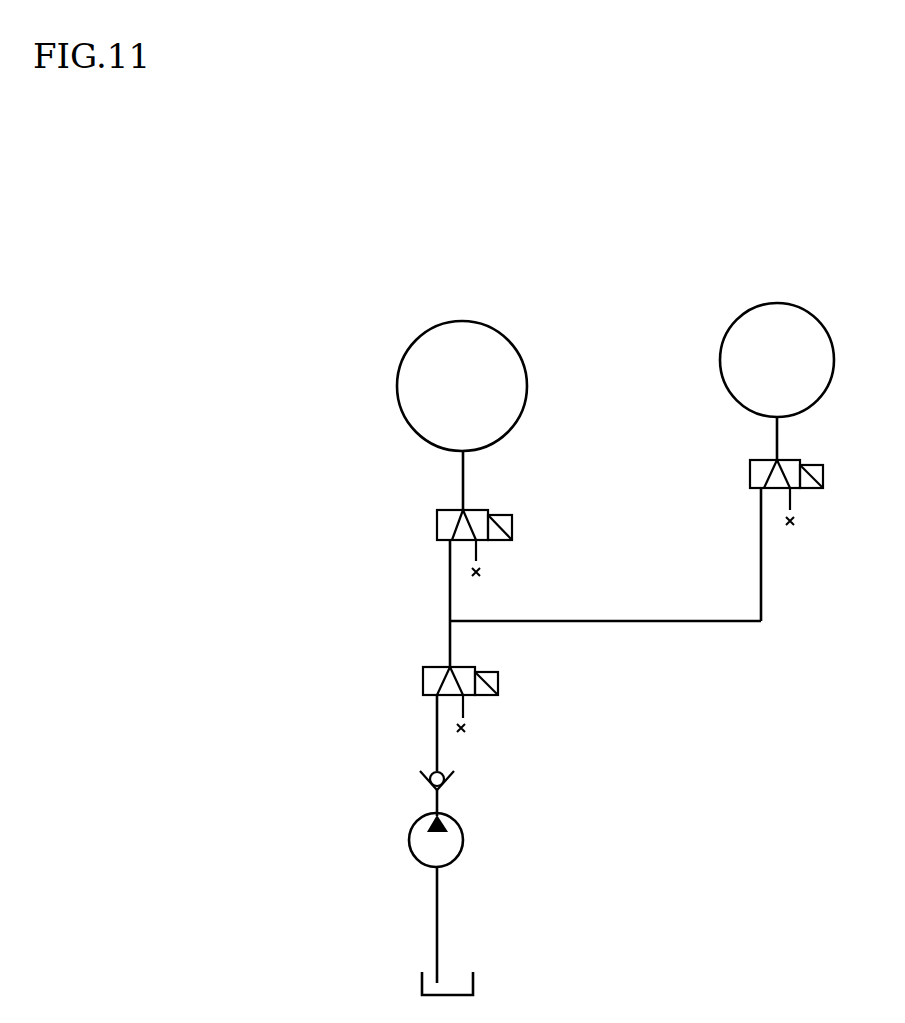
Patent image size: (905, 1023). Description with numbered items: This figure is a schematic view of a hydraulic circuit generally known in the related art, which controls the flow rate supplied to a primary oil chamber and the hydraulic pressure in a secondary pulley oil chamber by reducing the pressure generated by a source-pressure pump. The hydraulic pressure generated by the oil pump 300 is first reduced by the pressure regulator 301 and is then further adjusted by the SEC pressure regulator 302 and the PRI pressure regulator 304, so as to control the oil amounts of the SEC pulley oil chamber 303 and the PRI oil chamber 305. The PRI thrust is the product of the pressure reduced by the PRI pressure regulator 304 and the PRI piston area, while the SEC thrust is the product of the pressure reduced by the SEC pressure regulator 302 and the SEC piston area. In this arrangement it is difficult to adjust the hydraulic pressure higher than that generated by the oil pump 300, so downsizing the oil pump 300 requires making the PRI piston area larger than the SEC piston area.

The oil pump 300 is at (410, 829).
The pressure regulator 301 is at (423, 668).
The SEC pressure regulator 302 is at (437, 511).
The SEC pulley oil chamber 303 is at (423, 332).
The PRI pressure regulator 304 is at (750, 464).
The PRI oil chamber 305 is at (722, 336).